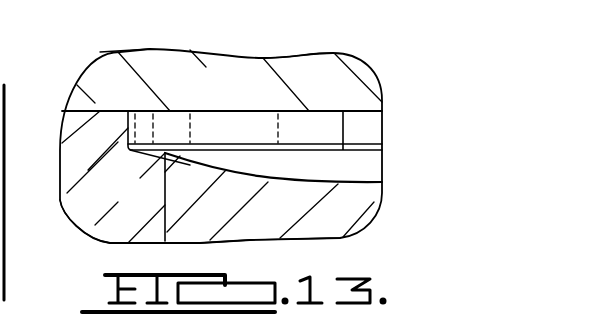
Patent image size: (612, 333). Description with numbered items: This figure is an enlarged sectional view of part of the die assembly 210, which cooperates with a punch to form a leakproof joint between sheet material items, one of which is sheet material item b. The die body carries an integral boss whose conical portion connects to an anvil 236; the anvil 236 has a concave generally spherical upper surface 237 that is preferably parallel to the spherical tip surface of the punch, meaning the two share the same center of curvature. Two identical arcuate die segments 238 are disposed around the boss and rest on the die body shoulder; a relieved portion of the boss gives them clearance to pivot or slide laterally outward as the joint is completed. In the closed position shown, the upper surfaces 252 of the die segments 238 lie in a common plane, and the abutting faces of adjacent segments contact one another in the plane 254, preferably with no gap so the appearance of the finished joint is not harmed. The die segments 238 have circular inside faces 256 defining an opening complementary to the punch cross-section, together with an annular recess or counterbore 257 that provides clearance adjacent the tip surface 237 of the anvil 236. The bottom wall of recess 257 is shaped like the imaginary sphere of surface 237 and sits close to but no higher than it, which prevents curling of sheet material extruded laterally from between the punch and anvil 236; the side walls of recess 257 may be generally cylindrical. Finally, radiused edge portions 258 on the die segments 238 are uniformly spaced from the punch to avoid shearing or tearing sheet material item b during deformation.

The die assembly 210 is at (90, 135).
The upper surfaces 252 is at (118, 50).
The plane 254 is at (350, 124).
The circular inside faces 256 is at (165, 197).
The annular recess or counterbore 257 is at (243, 111).
The radiused edge portions 258 is at (129, 133).
The anvil 236 is at (180, 243).
The concave generally spherical upper surface 237 is at (347, 195).
The arcuate die segments 238 is at (108, 226).
The sheet material item b is at (294, 70).